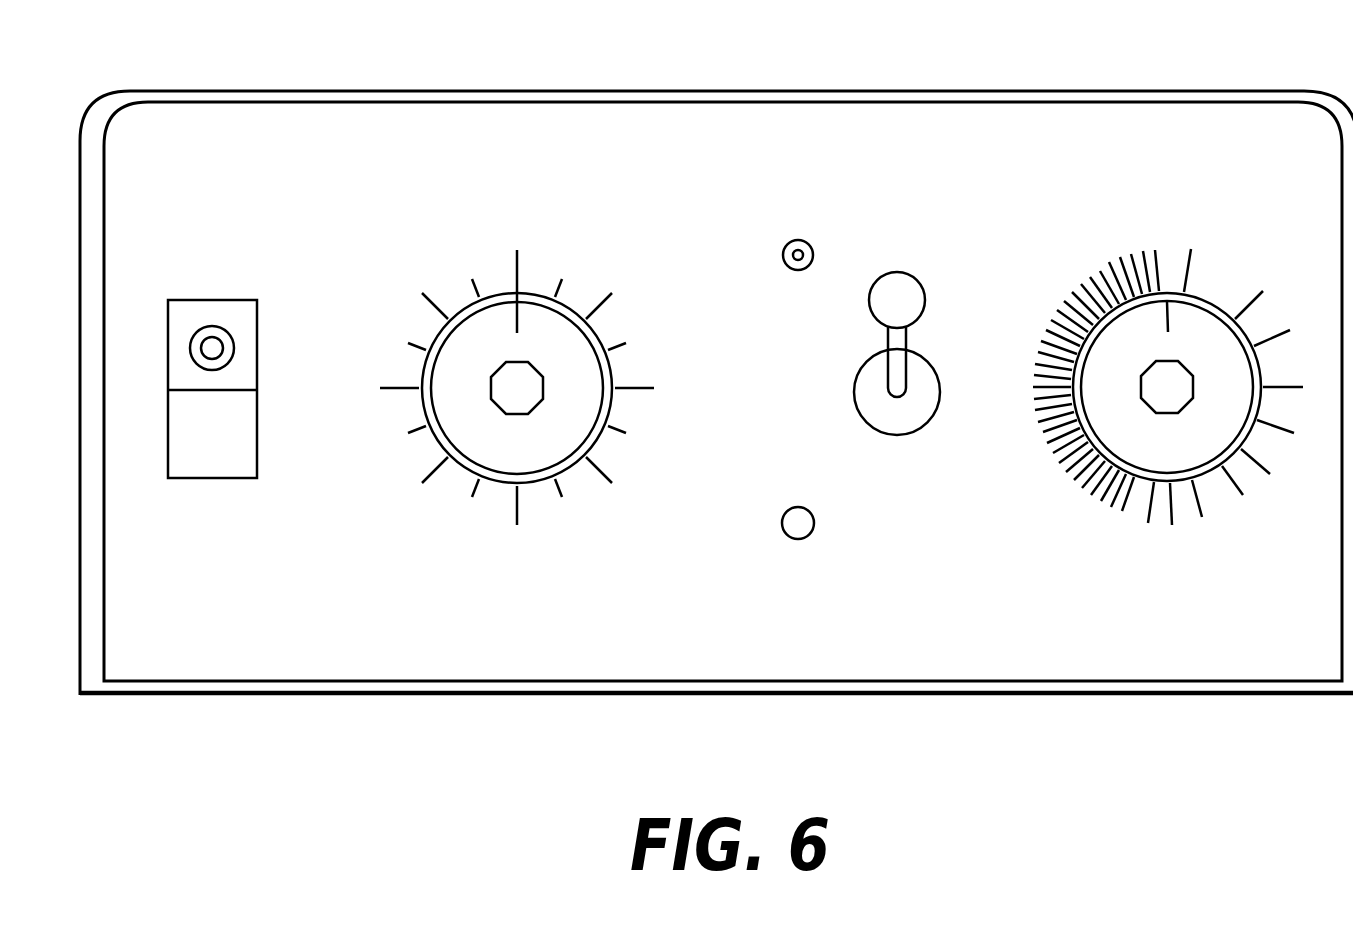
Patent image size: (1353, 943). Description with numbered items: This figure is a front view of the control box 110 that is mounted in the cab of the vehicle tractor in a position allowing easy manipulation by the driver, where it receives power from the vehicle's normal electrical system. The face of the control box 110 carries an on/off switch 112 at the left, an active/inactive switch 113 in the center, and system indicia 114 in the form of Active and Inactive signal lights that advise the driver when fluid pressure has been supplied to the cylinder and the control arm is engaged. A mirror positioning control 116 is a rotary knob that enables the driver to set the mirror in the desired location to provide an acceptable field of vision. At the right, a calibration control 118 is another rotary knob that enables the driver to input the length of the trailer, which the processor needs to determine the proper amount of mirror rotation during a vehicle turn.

The control box 110 is at (742, 91).
The on/off switch 112 is at (215, 300).
The active/inactive switch 113 is at (852, 393).
The system indicia 114 is at (782, 255).
The mirror positioning control 116 is at (470, 315).
The calibration control 118 is at (1112, 304).